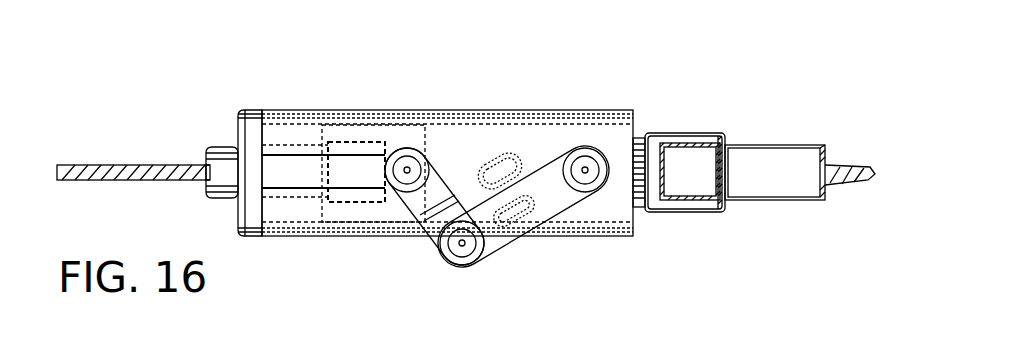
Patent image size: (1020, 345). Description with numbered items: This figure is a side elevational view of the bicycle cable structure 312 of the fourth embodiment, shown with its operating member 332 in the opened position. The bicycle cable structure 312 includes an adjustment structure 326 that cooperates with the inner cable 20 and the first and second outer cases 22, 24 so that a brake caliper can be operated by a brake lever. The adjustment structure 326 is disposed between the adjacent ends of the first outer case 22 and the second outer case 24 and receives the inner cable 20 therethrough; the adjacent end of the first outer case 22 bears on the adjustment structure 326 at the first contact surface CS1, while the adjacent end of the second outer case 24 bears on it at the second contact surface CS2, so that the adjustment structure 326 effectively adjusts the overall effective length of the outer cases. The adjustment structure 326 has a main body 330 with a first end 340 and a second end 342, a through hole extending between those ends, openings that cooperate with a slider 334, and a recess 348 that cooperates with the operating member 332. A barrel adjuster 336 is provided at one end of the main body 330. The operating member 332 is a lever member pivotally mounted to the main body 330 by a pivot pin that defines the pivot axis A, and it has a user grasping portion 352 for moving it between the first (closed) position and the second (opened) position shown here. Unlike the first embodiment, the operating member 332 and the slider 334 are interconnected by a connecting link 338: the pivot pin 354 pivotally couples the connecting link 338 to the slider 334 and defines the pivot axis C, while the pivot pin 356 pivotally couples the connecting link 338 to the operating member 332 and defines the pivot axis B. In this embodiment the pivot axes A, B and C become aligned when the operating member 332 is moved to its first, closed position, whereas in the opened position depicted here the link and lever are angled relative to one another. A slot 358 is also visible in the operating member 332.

The bicycle cable structure 312 is at (165, 55).
The inner cable 20 is at (70, 165).
The first outer case 22 is at (215, 146).
The second outer case 24 is at (782, 145).
The adjustment structure 326 is at (370, 278).
The main body 330 is at (613, 238).
The operating member 332 is at (554, 160).
The slider 334 is at (310, 138).
The barrel adjuster 336 is at (716, 132).
The connecting link 338 is at (460, 197).
The first end 340 is at (237, 122).
The second end 342 is at (634, 114).
The recess 348 is at (497, 170).
The user grasping portion 352 is at (585, 170).
The pivot pin 354 is at (407, 170).
The pivot pin 356 is at (466, 250).
The lever slot 358 is at (518, 213).
The pivot axis A is at (585, 172).
The pivot axis B is at (462, 243).
The pivot axis C is at (403, 178).
The first contact surface CS1 is at (397, 187).
The second contact surface CS2 is at (663, 178).